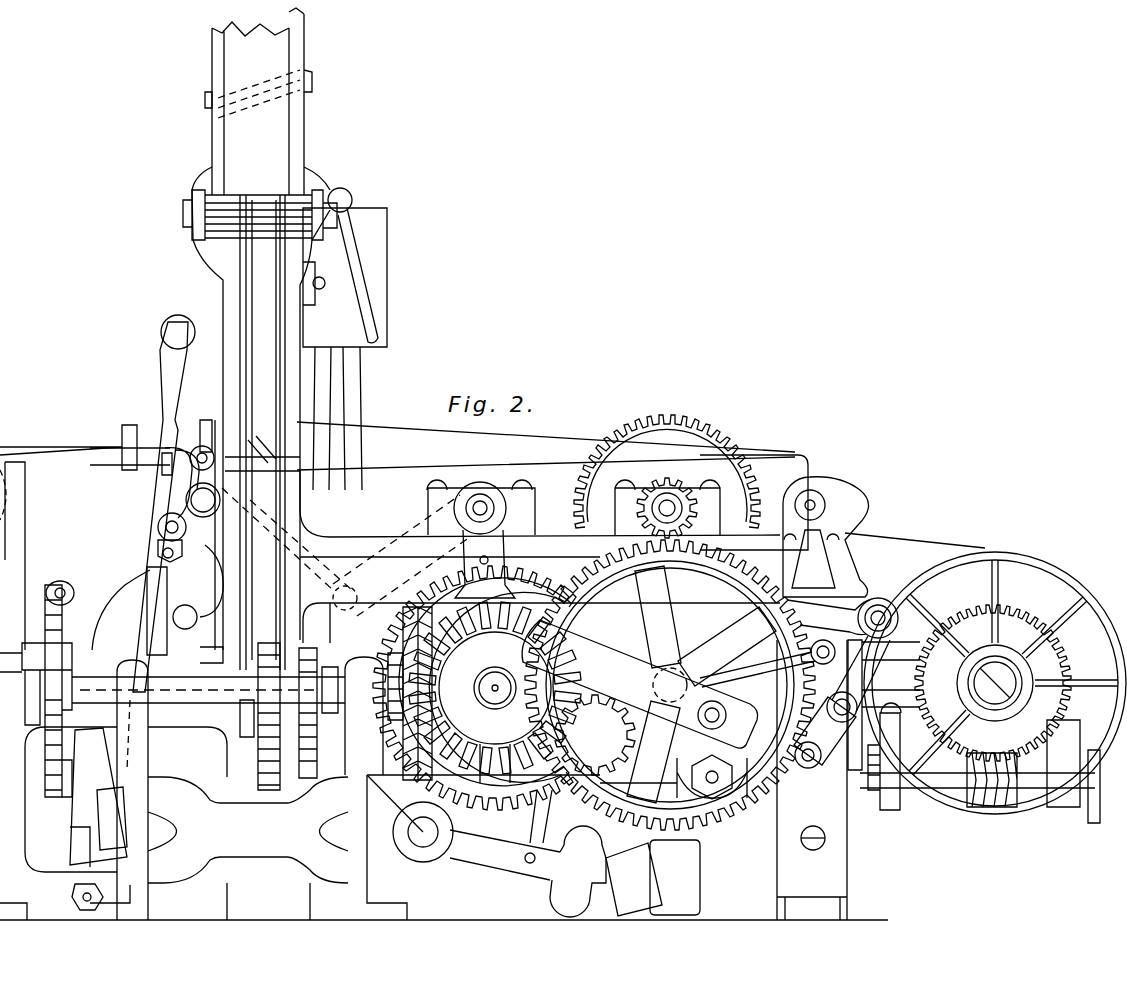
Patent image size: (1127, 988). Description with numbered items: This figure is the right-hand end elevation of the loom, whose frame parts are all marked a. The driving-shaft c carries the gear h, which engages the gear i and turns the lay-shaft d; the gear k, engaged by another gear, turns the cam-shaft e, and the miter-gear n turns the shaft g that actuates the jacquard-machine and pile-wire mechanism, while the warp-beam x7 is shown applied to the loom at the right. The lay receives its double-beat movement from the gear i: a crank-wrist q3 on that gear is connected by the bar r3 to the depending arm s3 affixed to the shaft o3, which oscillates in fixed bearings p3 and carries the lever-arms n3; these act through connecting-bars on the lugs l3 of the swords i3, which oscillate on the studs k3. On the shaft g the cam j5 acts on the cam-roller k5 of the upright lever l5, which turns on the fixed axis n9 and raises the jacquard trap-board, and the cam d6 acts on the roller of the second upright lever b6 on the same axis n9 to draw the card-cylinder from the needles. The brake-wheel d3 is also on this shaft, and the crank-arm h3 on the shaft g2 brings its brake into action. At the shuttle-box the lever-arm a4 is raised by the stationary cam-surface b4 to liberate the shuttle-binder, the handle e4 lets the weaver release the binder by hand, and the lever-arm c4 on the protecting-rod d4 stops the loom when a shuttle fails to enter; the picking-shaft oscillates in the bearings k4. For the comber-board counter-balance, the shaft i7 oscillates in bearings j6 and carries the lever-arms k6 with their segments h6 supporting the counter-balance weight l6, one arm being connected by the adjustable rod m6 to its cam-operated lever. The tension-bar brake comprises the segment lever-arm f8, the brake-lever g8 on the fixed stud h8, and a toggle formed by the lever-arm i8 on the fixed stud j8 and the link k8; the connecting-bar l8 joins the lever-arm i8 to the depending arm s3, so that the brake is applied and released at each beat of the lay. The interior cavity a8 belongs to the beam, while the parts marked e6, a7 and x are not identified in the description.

The loom-frame a is at (492, 464).
The slot e6 is at (246, 94).
The fixed axis n9 is at (246, 215).
The lever and rods a7 is at (345, 349).
The upright lever l5 is at (257, 430).
The upright lever b6 is at (276, 430).
The handle e4 is at (167, 431).
The stationary cam-surface b4 is at (262, 445).
The lever-arm a4 is at (195, 461).
The lugs l3 is at (203, 481).
The lever-arm c4 is at (178, 494).
The protecting-rod d4 is at (185, 577).
The bearings k4 is at (157, 503).
The crank-arm h3 is at (60, 580).
The shaft g2 is at (36, 691).
The shaft g is at (208, 690).
The cam j5 is at (269, 716).
The cam d6 is at (309, 713).
The cam-roller k5 is at (241, 730).
The swords i3 is at (98, 797).
The brake-wheel d3 is at (57, 787).
The studs k3 is at (72, 898).
The shaft o3 is at (481, 507).
The fixed bearings p3 is at (492, 553).
The depending arm s3 is at (487, 571).
The lever-arms n3 is at (346, 552).
The gear x is at (667, 462).
The driving-shaft c is at (667, 508).
The gear h is at (649, 508).
The interior cavity a8 is at (758, 490).
The lever-arm f8 is at (826, 537).
The brake-lever g8 is at (842, 618).
The fixed stud h8 is at (880, 604).
The lay-shaft d is at (670, 685).
The gear i is at (634, 589).
The bar r3 is at (640, 684).
The crank-wrist q3 is at (712, 750).
The connecting-bar l8 is at (757, 669).
The link k8 is at (825, 719).
The lever-arm i8 is at (823, 693).
The fixed stud j8 is at (808, 765).
The cam-shaft e is at (495, 688).
The miter-gear n is at (484, 692).
The adjustable rod m6 is at (474, 704).
The gear k is at (595, 735).
The bearings j6 is at (395, 803).
The shaft i7 is at (423, 832).
The lever-arms k6 is at (505, 855).
The segments h6 is at (578, 871).
The counter-balance weight l6 is at (653, 878).
The warp-beam x7 is at (993, 687).